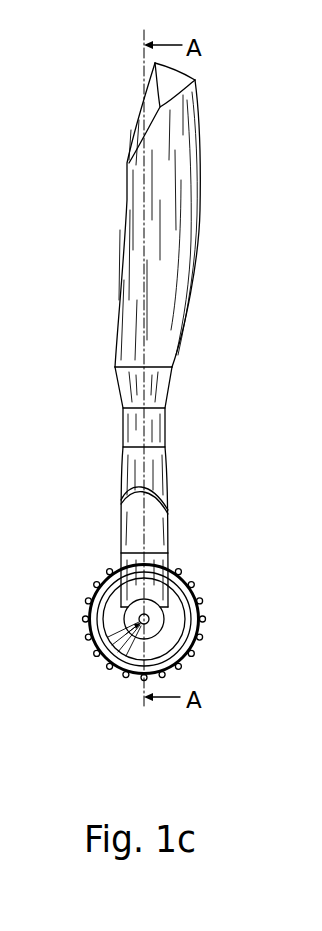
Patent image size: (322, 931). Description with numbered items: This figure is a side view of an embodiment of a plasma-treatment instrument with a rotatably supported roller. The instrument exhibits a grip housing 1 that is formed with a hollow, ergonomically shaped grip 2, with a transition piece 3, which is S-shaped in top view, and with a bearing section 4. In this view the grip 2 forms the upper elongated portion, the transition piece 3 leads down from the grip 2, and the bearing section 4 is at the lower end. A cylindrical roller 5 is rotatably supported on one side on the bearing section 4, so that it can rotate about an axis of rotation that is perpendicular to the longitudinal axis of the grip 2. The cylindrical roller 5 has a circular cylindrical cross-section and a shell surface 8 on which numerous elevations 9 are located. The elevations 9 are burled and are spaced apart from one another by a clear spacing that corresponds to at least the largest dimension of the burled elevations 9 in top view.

The grip housing 1 is at (194, 402).
The grip 2 is at (187, 163).
The transition piece 3 is at (153, 523).
The bearing section 4 is at (172, 628).
The cylindrical roller 5 is at (193, 583).
The shell surface 8 is at (188, 658).
The elevations 9 is at (203, 603).